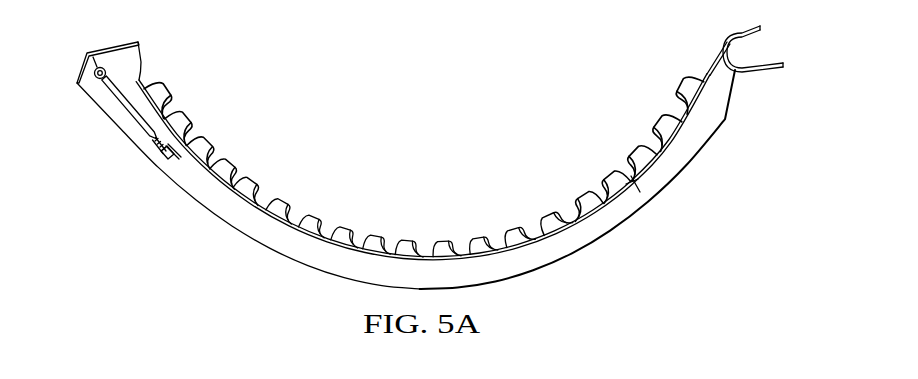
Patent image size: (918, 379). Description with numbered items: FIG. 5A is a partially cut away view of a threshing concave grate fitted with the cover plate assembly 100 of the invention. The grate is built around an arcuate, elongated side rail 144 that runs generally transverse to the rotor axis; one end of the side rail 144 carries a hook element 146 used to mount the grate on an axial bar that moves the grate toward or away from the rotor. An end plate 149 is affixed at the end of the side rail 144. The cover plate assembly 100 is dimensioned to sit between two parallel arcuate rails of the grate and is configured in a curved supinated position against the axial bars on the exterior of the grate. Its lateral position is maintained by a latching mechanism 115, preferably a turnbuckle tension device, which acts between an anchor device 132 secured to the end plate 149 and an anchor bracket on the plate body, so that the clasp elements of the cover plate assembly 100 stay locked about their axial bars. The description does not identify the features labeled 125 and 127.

The cover plate assembly 100 is at (422, 171).
The latching mechanism 115 is at (123, 118).
The teeth 125 is at (380, 226).
The outer wall 127 is at (312, 281).
The anchor device 132 is at (84, 84).
The side rail 144 is at (590, 230).
The hook element 146 is at (760, 70).
The end plate 149 is at (100, 52).